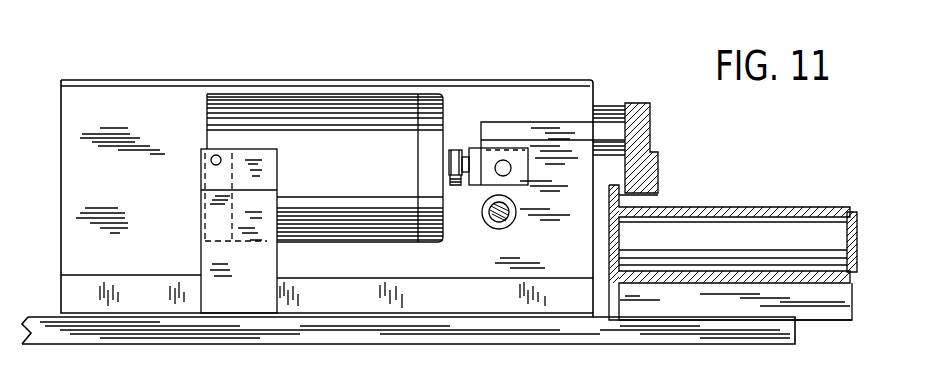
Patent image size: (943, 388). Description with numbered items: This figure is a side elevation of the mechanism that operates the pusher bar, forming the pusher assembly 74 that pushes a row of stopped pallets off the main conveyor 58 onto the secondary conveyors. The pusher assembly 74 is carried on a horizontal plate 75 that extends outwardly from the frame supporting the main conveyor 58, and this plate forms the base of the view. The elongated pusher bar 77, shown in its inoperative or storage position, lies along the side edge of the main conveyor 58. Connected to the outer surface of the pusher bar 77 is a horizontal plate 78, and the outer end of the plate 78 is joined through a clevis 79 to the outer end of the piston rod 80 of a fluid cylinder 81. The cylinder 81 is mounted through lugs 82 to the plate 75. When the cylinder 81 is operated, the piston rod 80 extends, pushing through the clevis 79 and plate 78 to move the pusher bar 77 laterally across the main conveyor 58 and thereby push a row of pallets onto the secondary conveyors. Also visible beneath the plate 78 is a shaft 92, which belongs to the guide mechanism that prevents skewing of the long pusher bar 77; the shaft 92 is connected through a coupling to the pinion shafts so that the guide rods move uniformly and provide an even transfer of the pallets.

The pusher assembly 74 is at (461, 72).
The horizontal plate 75 is at (470, 328).
The pusher bar 77 is at (655, 150).
The horizontal plate 78 is at (556, 132).
The clevis 79 is at (473, 148).
The piston rod 80 is at (446, 195).
The fluid cylinder 81 is at (370, 107).
The lugs 82 is at (220, 251).
The shaft 92 is at (513, 218).
The main conveyor 58 is at (823, 201).